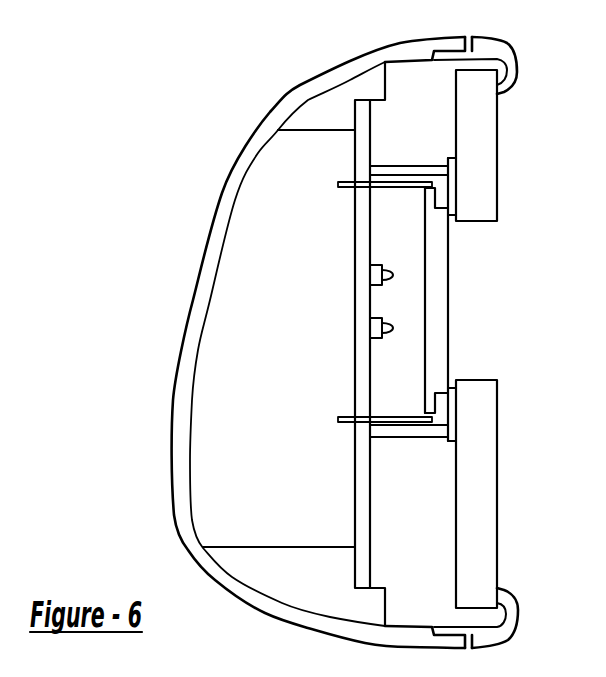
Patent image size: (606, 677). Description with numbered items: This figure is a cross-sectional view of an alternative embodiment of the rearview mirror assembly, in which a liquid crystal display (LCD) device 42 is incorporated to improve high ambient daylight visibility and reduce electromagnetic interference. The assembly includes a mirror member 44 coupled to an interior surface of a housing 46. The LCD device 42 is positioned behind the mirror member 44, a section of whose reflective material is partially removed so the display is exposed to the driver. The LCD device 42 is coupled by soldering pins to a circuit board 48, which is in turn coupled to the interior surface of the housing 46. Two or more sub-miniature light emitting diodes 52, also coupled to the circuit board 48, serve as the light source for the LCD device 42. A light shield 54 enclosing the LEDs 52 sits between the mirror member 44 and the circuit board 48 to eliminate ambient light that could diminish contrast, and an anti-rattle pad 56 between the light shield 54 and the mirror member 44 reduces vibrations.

The liquid crystal display (LCD) device 42 is at (448, 305).
The mirror member 44 is at (497, 183).
The housing 46 is at (232, 163).
The circuit board 48 is at (355, 270).
The sub-miniature light emitting diodes (LEDs) 52 is at (379, 340).
The light shield 54 is at (412, 440).
The anti-rattle pad 56 is at (457, 415).